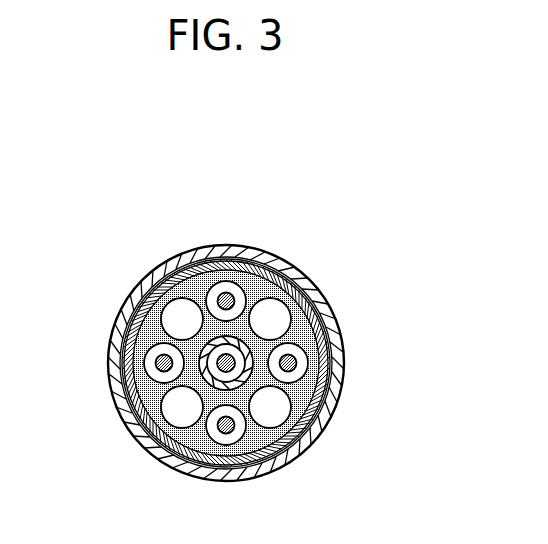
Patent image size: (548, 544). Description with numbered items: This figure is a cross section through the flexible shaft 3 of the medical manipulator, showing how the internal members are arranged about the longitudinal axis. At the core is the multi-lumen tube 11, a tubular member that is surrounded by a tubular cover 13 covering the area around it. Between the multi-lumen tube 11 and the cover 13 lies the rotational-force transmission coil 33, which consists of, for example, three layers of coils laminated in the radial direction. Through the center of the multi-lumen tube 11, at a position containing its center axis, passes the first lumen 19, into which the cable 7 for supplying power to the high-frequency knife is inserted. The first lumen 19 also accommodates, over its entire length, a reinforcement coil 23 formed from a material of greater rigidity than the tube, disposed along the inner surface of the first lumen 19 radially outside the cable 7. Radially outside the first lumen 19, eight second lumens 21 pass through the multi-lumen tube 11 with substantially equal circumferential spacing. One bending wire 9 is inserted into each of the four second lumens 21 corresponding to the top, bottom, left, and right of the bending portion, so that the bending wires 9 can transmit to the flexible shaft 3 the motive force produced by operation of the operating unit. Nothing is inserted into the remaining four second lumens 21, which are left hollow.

The flexible shaft 3 is at (440, 160).
The cable 7 is at (231, 370).
The bending wires 9 is at (225, 300).
The multi-lumen tube 11 is at (172, 272).
The cover 13 is at (140, 290).
The first lumen 19 is at (247, 328).
The second lumens 21 is at (284, 312).
The reinforcement coil 23 is at (190, 337).
The rotational-force transmission coil 33 is at (124, 367).